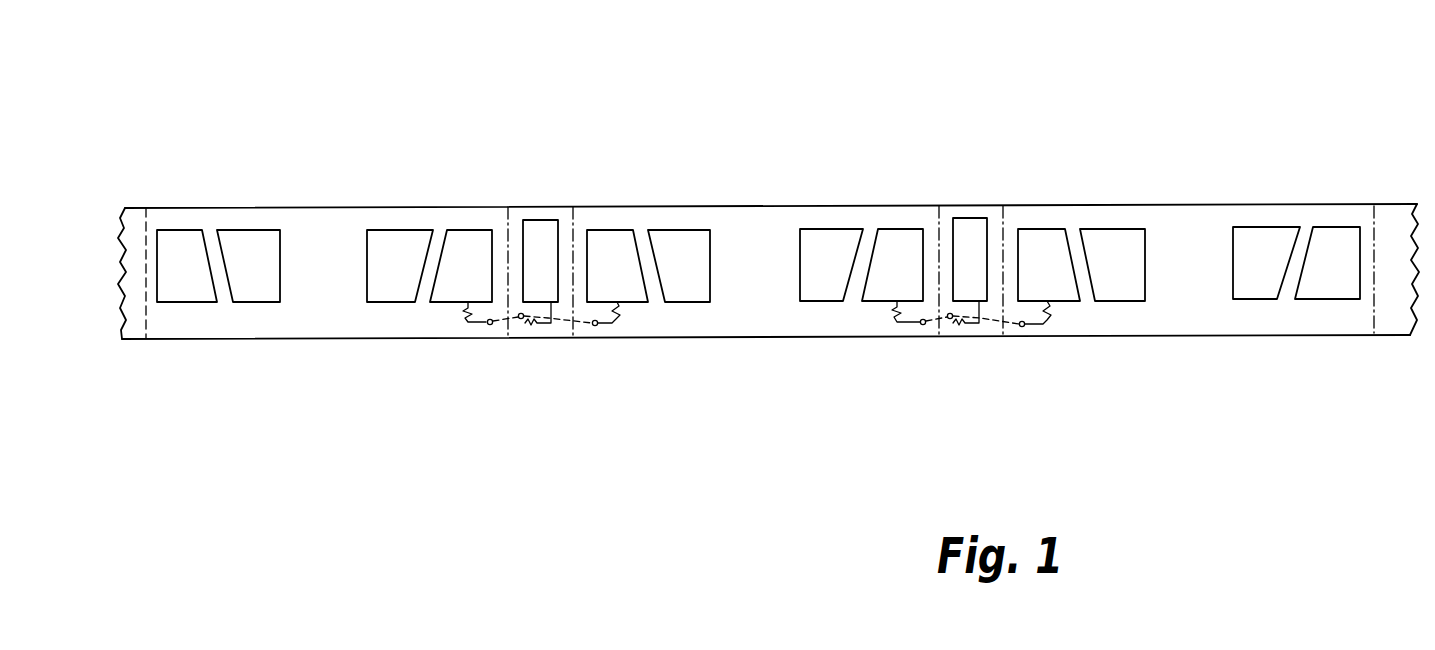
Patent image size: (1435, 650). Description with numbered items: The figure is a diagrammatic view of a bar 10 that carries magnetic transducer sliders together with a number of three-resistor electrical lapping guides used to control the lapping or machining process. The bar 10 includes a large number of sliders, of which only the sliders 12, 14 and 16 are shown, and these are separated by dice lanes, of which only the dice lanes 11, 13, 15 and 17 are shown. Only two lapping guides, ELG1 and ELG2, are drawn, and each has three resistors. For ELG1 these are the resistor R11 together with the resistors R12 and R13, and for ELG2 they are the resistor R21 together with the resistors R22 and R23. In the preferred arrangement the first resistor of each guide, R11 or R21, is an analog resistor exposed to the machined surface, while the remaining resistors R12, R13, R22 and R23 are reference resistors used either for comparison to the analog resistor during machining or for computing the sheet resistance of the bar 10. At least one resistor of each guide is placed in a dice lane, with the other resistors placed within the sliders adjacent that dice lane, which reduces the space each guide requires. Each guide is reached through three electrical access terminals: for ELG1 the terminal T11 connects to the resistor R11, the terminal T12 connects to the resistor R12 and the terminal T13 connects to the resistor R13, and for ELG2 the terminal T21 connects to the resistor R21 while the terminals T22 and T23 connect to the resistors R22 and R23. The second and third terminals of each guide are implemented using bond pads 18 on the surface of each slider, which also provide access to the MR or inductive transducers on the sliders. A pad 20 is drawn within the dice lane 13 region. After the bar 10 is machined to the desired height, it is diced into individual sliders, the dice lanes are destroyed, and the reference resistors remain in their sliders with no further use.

The bar 10 is at (1250, 117).
The dice lane 11 is at (133, 318).
The slider 12 is at (328, 216).
The dice lane 13 is at (531, 210).
The slider 14 is at (778, 214).
The dice lane 15 is at (967, 210).
The slider 16 is at (1148, 215).
The dice lane 17 is at (1395, 318).
The bond pads 18 is at (175, 236).
The ELG pad 20 is at (548, 230).
The access terminal T11 is at (538, 288).
The access terminal T12 is at (462, 272).
The access terminal T13 is at (606, 273).
The access terminal T21 is at (970, 271).
The access terminal T22 is at (896, 273).
The access terminal T23 is at (1038, 273).
The analog resistor R11 is at (537, 322).
The reference resistor R12 is at (453, 318).
The reference resistor R13 is at (628, 318).
The analog resistor R21 is at (965, 322).
The reference resistor R22 is at (884, 317).
The reference resistor R23 is at (1059, 318).
The electrical lapping guide ELG1 is at (540, 377).
The electrical lapping guide ELG2 is at (964, 377).